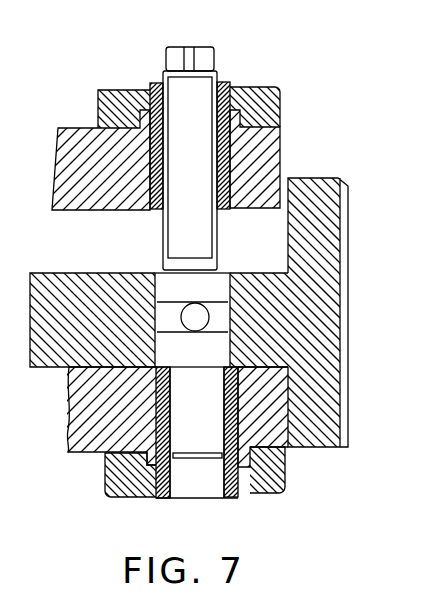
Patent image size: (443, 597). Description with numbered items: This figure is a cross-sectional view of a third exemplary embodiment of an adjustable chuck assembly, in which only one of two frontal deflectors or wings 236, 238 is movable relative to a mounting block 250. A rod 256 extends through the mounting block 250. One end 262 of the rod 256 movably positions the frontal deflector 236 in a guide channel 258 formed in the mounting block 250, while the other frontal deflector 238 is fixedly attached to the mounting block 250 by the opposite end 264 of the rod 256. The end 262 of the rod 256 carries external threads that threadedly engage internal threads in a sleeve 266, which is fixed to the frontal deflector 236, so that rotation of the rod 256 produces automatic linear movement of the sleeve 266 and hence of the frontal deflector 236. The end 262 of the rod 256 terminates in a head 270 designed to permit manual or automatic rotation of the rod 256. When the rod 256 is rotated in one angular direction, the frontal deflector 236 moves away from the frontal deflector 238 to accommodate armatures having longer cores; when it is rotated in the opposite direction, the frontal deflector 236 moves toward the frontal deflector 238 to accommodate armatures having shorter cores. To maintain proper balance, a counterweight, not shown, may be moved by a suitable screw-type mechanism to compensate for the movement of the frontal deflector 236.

The frontal deflector 236 is at (83, 128).
The frontal deflector 238 is at (94, 440).
The mounting block 250 is at (305, 330).
The rod 256 is at (227, 267).
The guide channel 258 is at (278, 252).
The end of the rod 262 is at (205, 97).
The opposite end of the rod 264 is at (232, 465).
The sleeve 266 is at (157, 83).
The head 270 is at (208, 50).